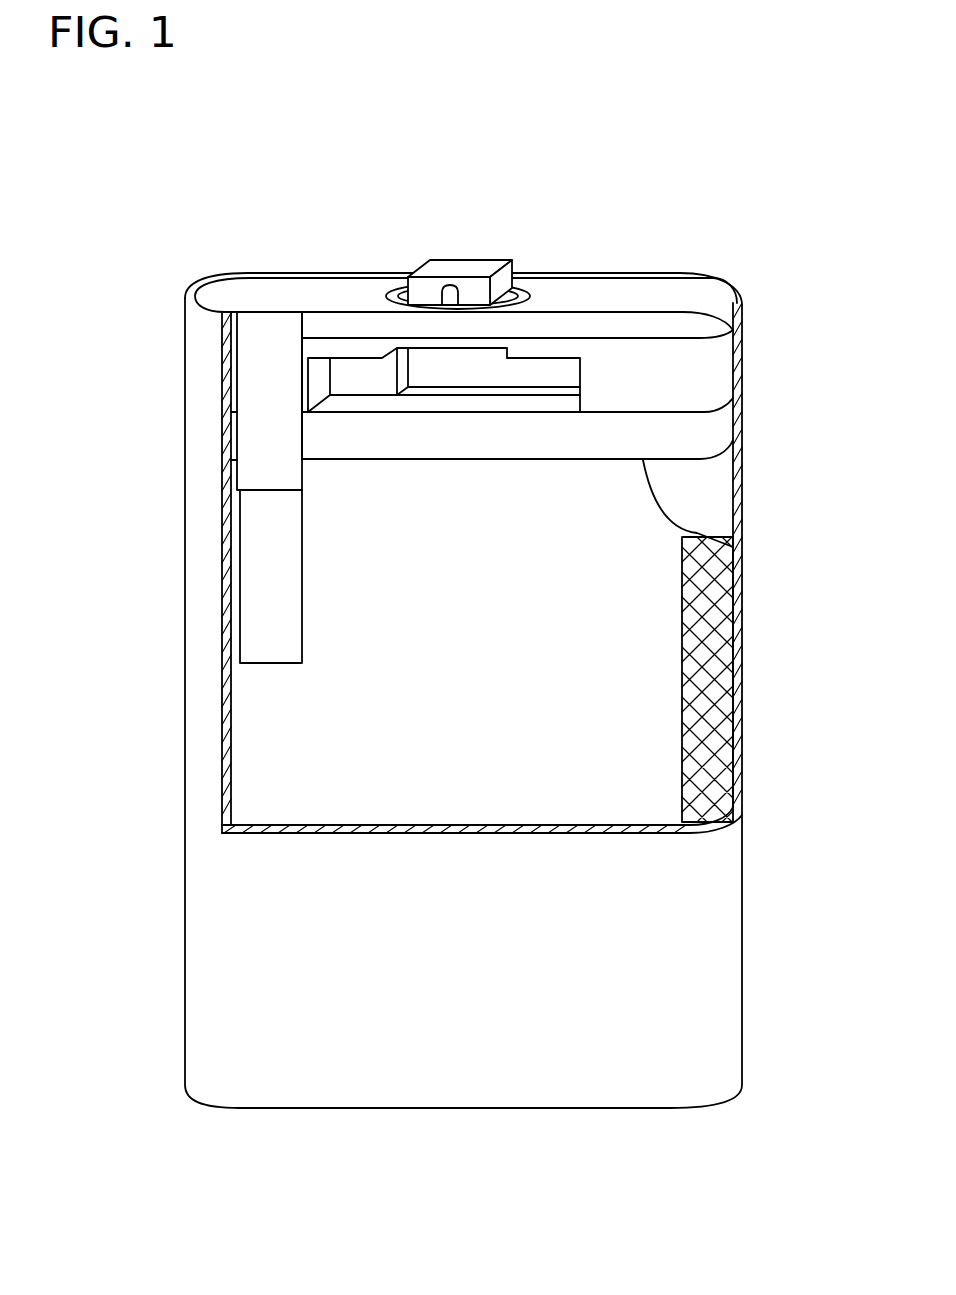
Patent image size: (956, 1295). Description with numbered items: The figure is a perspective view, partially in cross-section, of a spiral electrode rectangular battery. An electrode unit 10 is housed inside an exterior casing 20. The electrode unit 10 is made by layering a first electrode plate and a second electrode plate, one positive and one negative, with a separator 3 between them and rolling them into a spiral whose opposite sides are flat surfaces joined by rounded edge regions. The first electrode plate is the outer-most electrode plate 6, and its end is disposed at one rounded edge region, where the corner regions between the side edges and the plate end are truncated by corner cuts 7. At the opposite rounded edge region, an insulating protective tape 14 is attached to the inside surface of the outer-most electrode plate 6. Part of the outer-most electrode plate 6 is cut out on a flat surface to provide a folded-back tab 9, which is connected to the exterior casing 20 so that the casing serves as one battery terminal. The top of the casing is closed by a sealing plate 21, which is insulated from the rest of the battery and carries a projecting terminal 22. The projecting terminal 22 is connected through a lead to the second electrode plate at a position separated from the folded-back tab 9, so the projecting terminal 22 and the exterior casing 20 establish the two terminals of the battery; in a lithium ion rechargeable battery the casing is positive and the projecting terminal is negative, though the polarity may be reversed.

The separator 3 is at (498, 443).
The outer-most electrode plate 6 is at (563, 775).
The corner cuts 7 is at (657, 495).
The folded-back tab 9 is at (268, 390).
The electrode unit 10 is at (300, 770).
The insulating protective tape 14 is at (690, 647).
The exterior casing 20 is at (693, 928).
The sealing plate 21 is at (615, 297).
The projecting terminal 22 is at (457, 267).